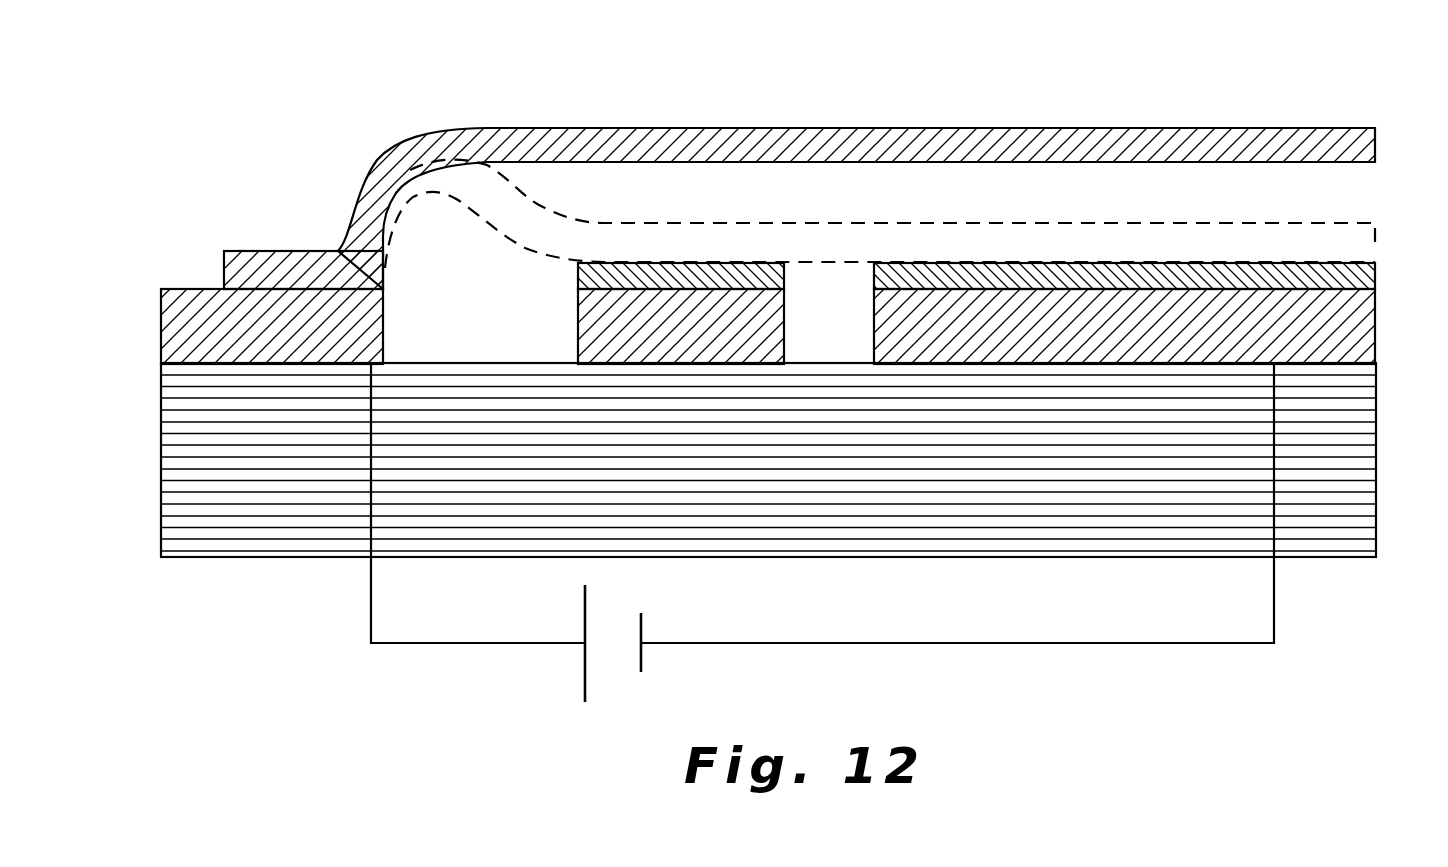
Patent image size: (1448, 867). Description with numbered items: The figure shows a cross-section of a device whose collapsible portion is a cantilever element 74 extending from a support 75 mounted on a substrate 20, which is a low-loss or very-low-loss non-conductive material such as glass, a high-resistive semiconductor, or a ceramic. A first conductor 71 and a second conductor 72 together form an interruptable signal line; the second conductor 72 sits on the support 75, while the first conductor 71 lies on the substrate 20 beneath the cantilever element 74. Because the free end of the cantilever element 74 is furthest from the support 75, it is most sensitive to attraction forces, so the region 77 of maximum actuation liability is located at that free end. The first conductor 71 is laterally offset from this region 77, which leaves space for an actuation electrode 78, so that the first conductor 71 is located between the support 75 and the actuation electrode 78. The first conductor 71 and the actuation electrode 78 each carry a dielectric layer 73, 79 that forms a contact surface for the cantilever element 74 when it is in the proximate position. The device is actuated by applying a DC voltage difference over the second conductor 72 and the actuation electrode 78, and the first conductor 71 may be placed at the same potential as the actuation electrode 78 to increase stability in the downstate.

The substrate 20 is at (1335, 432).
The first conductor 71 is at (603, 325).
The second conductor 72 is at (276, 268).
The dielectric layer 73 is at (603, 275).
The cantilever element 74 is at (641, 143).
The support 75 is at (190, 334).
The region of maximum actuation liability 77 is at (1375, 113).
The actuation electrode 78 is at (1337, 332).
The dielectric layer 79 is at (1337, 275).